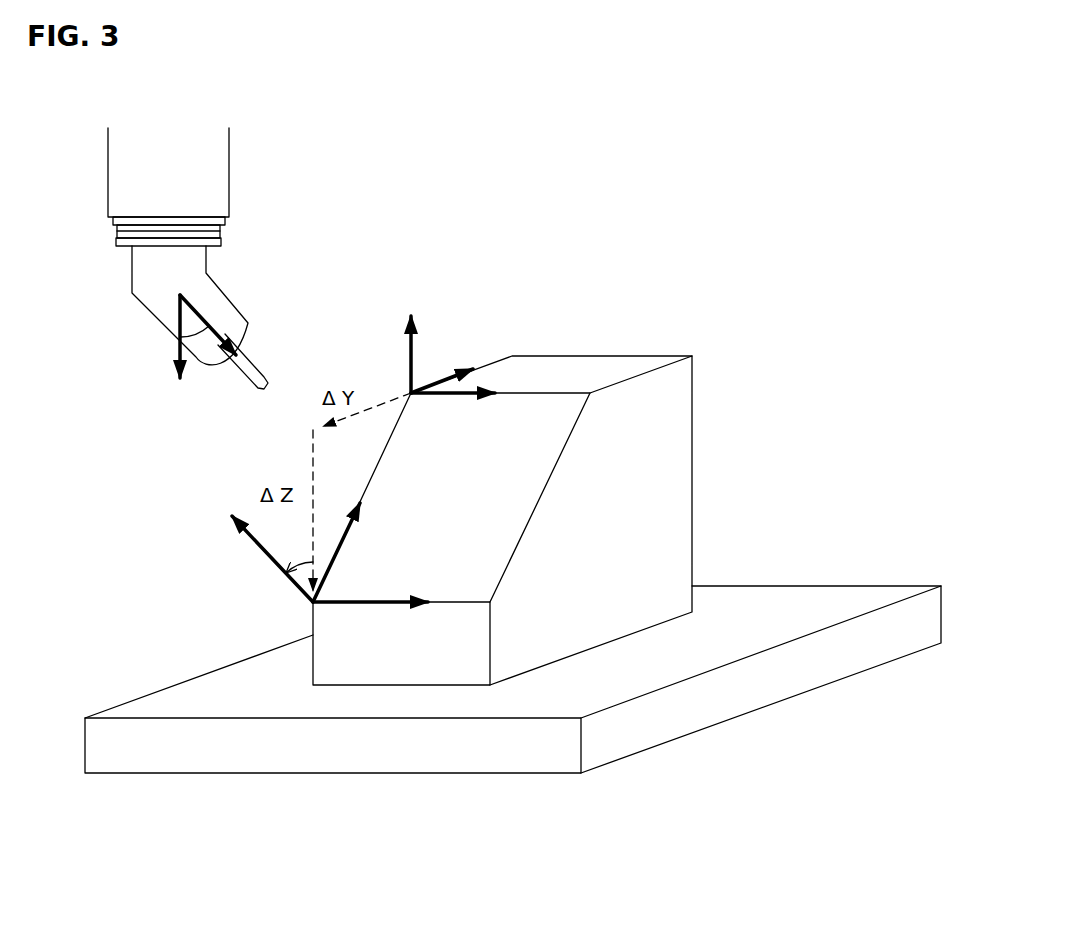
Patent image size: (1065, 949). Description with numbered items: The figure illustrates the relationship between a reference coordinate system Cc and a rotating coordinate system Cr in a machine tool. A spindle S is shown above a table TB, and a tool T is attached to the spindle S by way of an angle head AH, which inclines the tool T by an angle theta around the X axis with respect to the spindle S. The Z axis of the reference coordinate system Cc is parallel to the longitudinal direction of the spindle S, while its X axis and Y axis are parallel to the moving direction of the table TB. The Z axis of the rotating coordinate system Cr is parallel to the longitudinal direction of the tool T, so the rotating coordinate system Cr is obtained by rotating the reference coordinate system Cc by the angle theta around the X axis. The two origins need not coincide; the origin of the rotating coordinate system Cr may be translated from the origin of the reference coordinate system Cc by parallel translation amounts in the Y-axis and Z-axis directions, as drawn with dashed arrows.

The spindle S is at (203, 177).
The angle head AH is at (205, 298).
The tool T is at (253, 375).
The table TB is at (466, 745).
The reference coordinate system Cc is at (413, 357).
The rotating coordinate system Cr is at (265, 553).